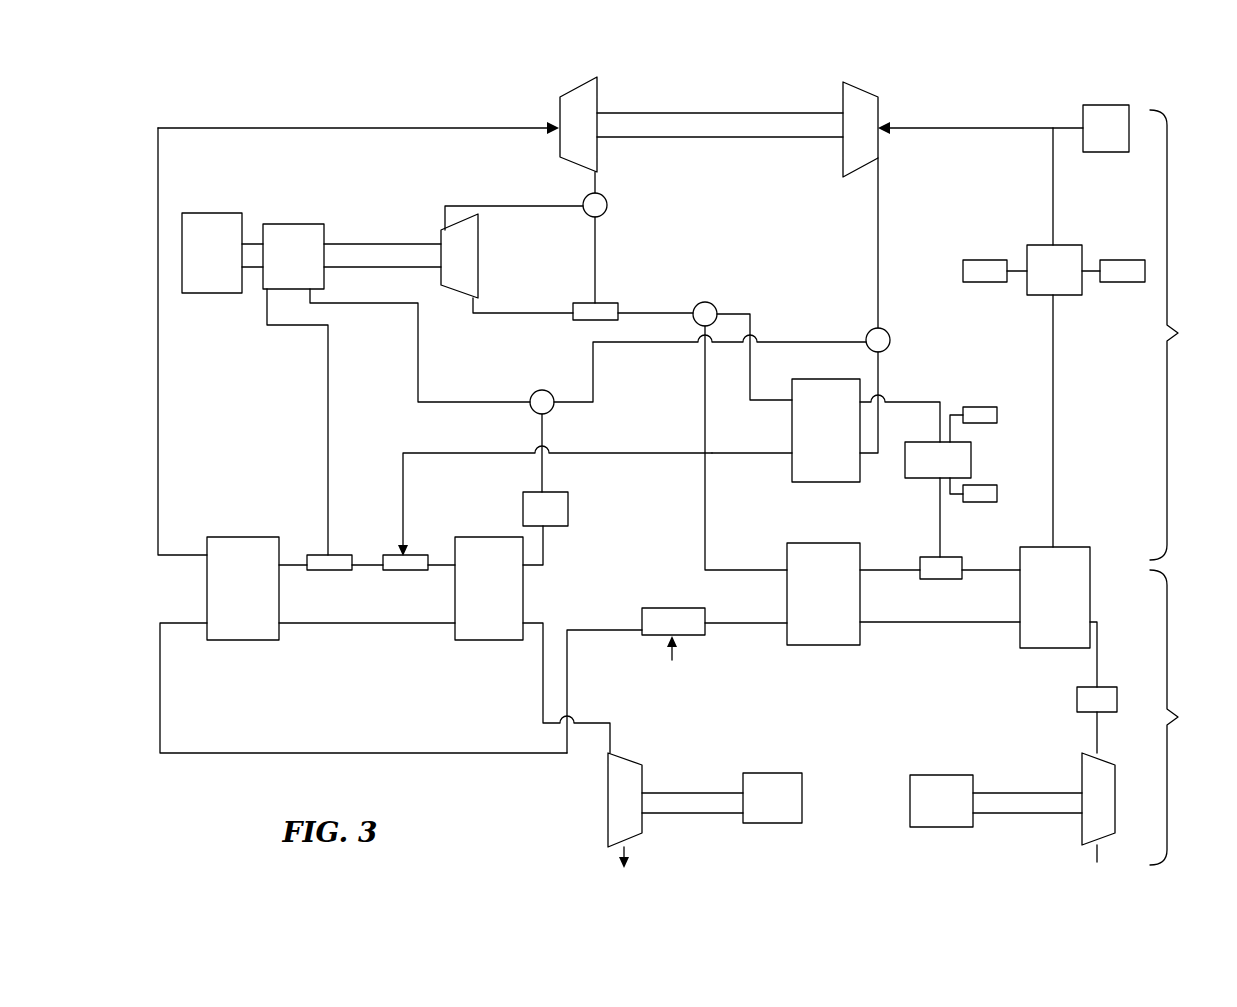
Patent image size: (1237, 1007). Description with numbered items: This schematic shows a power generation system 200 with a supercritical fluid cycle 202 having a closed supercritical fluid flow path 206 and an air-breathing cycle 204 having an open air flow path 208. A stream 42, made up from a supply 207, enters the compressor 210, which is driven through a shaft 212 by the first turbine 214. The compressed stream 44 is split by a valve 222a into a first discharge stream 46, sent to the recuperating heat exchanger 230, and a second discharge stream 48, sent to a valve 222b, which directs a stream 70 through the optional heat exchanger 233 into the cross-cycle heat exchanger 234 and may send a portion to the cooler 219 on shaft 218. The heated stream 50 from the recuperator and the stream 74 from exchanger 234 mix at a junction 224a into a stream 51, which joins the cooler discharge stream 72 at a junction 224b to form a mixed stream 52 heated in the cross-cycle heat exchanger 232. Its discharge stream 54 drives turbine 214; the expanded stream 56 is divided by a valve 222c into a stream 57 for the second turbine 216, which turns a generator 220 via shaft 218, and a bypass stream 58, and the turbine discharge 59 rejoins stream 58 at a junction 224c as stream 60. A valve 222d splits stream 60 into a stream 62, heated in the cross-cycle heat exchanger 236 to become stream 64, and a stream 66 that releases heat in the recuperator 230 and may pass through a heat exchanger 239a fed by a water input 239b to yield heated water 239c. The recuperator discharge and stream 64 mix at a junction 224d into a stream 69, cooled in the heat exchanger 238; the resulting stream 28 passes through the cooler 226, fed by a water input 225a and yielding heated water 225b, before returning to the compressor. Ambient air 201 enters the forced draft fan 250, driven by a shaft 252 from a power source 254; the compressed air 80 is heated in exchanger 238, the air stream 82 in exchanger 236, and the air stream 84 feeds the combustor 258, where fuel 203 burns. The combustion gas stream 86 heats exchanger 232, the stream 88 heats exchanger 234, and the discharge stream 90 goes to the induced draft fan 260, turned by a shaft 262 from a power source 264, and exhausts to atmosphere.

The power generation system 200 is at (212, 78).
The supercritical fluid flow path 206 is at (432, 112).
The discharge stream 54 is at (157, 418).
The first turbine 214 is at (572, 103).
The shaft 212 is at (712, 112).
The compressor 210 is at (873, 105).
The stream of supercritical fluid 42 is at (948, 128).
The supply 207 is at (1098, 118).
The stream of cooled supercritical fluid 28 is at (1054, 416).
The cooler 226 is at (1060, 262).
The water input 225a is at (980, 270).
The output stream 225b is at (1130, 278).
The stream of supercritical fluid 44 is at (879, 216).
The valve 222a is at (891, 342).
The first discharge stream 46 is at (879, 376).
The stream 56 is at (597, 188).
The valve 222c is at (608, 206).
The stream 57 is at (540, 204).
The stream 58 is at (597, 236).
The junction 224c is at (615, 302).
The stream 59 is at (548, 310).
The discharge stream 60 is at (672, 316).
The valve 222d is at (716, 302).
The first discharge stream 66 is at (751, 365).
The second discharge stream 48 is at (800, 342).
The valve 222b is at (534, 392).
The second discharge stream 62 is at (703, 385).
The stream 70 is at (550, 462).
The stream of heated supercritical fluid 50 is at (762, 456).
The recuperating heat exchanger 230 is at (826, 430).
The heat exchanger 239a is at (915, 476).
The water input 239b is at (988, 492).
The output stream 239c is at (988, 412).
The junction 224d is at (945, 566).
The discharge stream 64 is at (890, 570).
The mixed stream 69 is at (1005, 572).
The heat exchanger 238 is at (1055, 597).
The cross cycle heat exchanger 236 is at (823, 594).
The air stream 82 is at (960, 625).
The stream of compressed air 80 is at (1098, 660).
The forced draft fan 250 is at (1100, 830).
The ambient air 201 is at (1090, 858).
The shaft 252 is at (1030, 805).
The power source 254 is at (941, 801).
The air stream 84 is at (752, 626).
The combustor 258 is at (673, 621).
The fuel 203 is at (672, 660).
The stream of combustion gas 86 is at (568, 684).
The stream of hot combustion gas 88 is at (385, 625).
The air fluid flow path 208 is at (447, 755).
The discharge stream 90 is at (612, 745).
The induced draft fan 260 is at (617, 807).
The shaft 262 is at (712, 790).
The power source 264 is at (772, 798).
The cross cycle heat exchanger 232 is at (243, 588).
The cross cycle heat exchanger 234 is at (489, 588).
The heat exchanger 233 is at (545, 489).
The mixed stream 52 is at (292, 560).
The junction 224b is at (332, 572).
The stream 51 is at (366, 560).
The junction 224a is at (417, 553).
The stream 74 is at (438, 572).
The discharge stream 72 is at (327, 415).
The generator 220 is at (212, 253).
The cooler 219 is at (386, 313).
The shaft 218 is at (402, 245).
The second turbine 216 is at (459, 256).
The supercritical fluid cycle 202 is at (1191, 335).
The air-breathing cycle 204 is at (1193, 717).